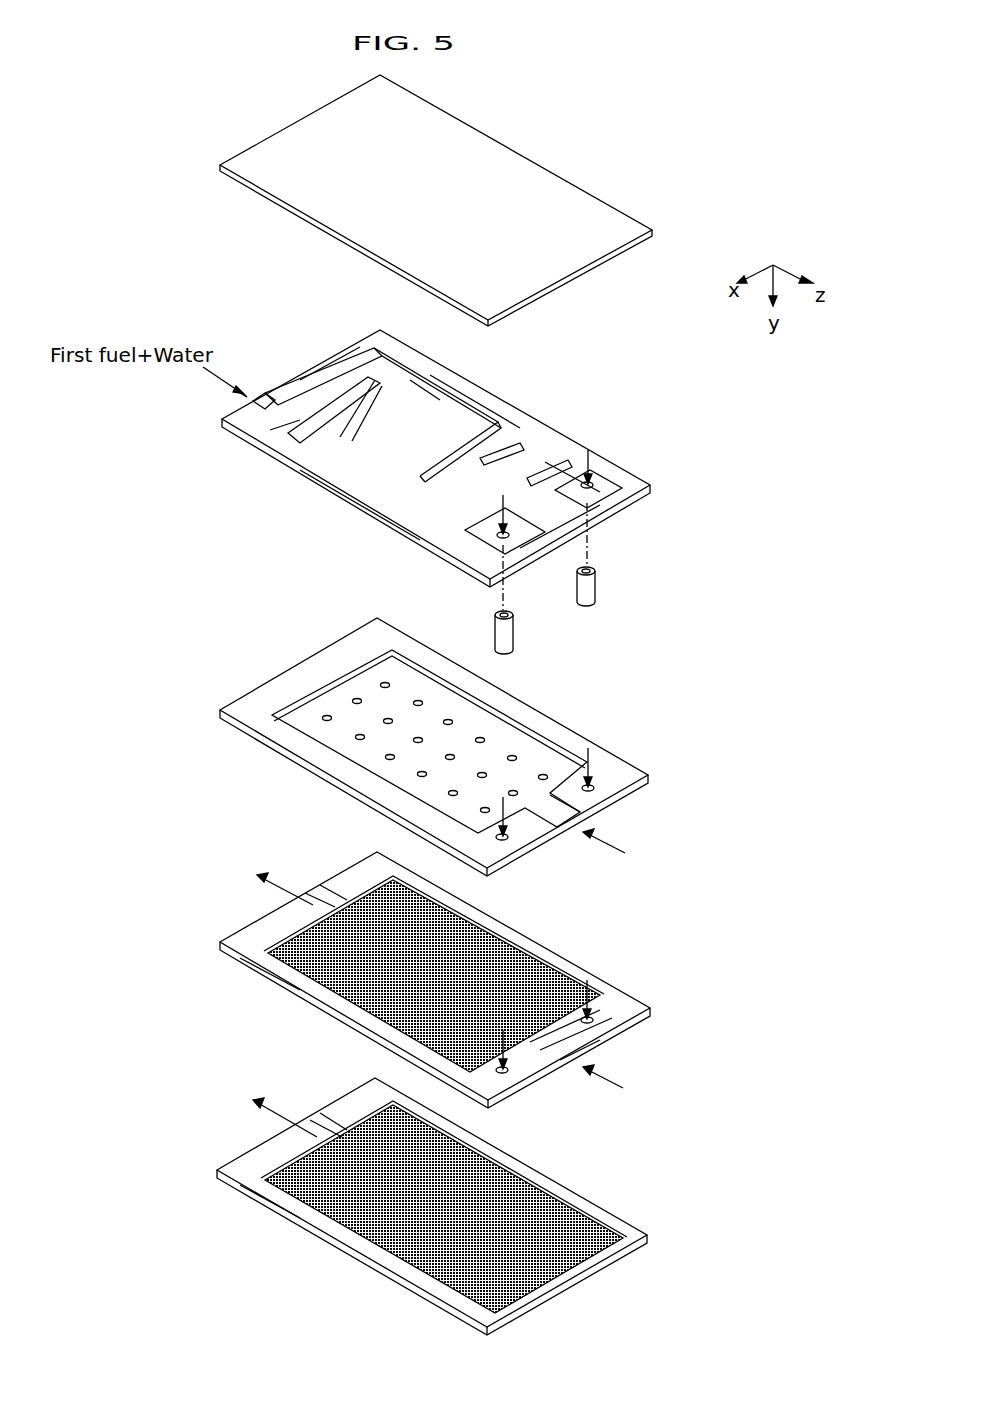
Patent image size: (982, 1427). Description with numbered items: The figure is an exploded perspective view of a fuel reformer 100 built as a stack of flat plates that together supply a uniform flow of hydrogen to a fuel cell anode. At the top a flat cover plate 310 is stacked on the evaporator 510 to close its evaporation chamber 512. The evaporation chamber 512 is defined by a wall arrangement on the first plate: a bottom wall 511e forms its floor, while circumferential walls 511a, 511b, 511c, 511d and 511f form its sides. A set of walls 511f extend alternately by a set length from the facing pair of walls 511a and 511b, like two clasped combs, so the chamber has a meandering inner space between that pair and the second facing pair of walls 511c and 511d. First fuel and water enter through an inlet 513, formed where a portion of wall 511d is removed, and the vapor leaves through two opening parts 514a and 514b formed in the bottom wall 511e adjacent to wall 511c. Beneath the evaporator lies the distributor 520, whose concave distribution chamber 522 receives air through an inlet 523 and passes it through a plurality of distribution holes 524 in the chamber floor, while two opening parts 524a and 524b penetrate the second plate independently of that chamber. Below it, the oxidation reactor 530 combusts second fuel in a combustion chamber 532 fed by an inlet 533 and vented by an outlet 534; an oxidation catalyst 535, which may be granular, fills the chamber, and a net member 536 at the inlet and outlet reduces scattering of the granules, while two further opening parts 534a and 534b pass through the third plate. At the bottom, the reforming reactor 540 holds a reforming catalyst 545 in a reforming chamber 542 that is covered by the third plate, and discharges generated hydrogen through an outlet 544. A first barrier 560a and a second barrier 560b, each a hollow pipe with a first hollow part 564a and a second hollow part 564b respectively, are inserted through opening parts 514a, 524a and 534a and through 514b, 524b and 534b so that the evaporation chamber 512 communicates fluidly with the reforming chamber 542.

The fuel reformer 100 is at (140, 148).
The cover plate 310 is at (567, 193).
The evaporator 510 is at (456, 436).
The circumferential wall 511a is at (352, 485).
The circumferential wall 511b is at (495, 410).
The circumferential wall 511c is at (578, 507).
The circumferential wall 511d is at (353, 352).
The bottom wall 511e is at (580, 465).
The circumferential walls 511f is at (423, 392).
The evaporation chamber 512 is at (522, 450).
The inlet 513 is at (254, 400).
The first opening part 514a is at (597, 483).
The second opening part 514b is at (478, 542).
The distributor 520 is at (476, 752).
The distribution chamber 522 is at (538, 758).
The inlet 523 is at (580, 822).
The distribution holes 524 is at (358, 735).
The first opening part 524a is at (592, 785).
The second opening part 524b is at (512, 838).
The oxidation reactor 530 is at (455, 996).
The combustion chamber 532 is at (523, 960).
The inlet 533 is at (580, 1075).
The outlet 534 is at (312, 896).
The first opening part 534a is at (593, 1018).
The second opening part 534b is at (510, 1072).
The oxidation catalyst 535 is at (320, 980).
The net member 536 is at (545, 1037).
The reforming reactor 540 is at (434, 1202).
The reforming chamber 542 is at (527, 1188).
The outlet 544 is at (312, 1125).
The reforming catalyst 545 is at (310, 1205).
The first barrier 560a is at (631, 560).
The second barrier 560b is at (549, 606).
The first hollow part 564a is at (597, 572).
The second hollow part 564b is at (515, 618).